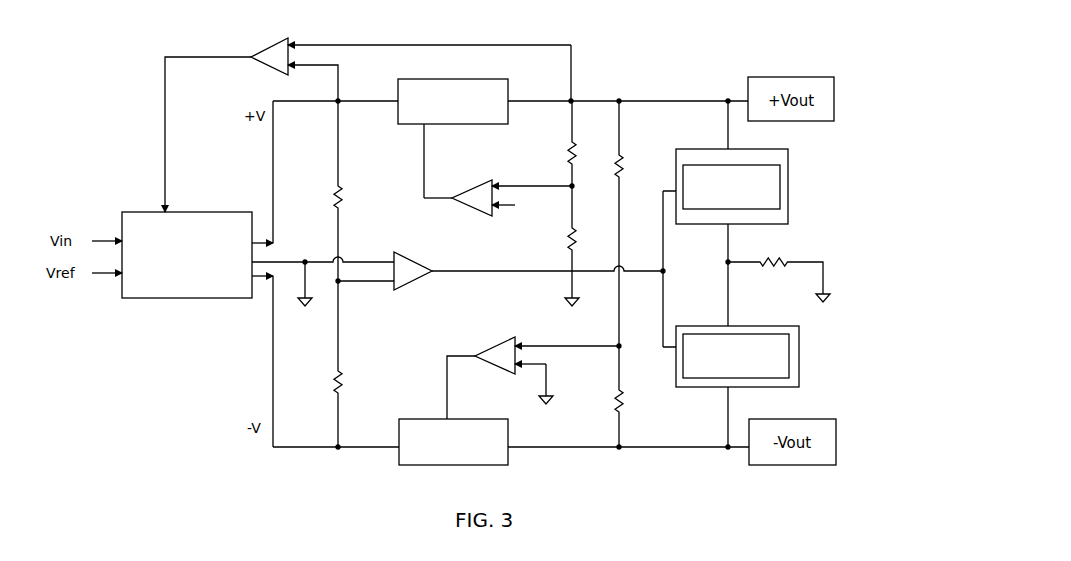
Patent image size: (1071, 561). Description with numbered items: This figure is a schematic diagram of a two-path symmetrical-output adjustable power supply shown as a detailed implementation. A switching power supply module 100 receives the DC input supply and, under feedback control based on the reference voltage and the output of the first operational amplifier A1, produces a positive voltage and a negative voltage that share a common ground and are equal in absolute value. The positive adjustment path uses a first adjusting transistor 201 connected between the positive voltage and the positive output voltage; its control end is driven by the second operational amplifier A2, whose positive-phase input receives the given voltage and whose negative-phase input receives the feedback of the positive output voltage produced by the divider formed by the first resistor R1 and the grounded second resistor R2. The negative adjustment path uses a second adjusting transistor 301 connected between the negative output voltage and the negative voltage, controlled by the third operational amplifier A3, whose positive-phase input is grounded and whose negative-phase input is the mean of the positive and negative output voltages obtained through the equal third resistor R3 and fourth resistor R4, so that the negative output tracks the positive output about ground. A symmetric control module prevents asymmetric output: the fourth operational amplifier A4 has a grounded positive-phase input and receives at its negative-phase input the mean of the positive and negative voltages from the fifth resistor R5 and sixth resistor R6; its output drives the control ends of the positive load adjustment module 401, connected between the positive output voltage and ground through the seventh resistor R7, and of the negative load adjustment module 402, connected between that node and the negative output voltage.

The switching power supply module 100 is at (193, 211).
The first adjusting transistor 201 is at (473, 79).
The second adjusting transistor 301 is at (468, 419).
The positive load adjustment module 401 is at (750, 149).
The negative load adjustment module 402 is at (745, 326).
The first operational amplifier A1 is at (368, 125).
The second operational amplifier A2 is at (498, 199).
The third operational amplifier A3 is at (533, 375).
The fourth operational amplifier A4 is at (528, 275).
The first resistor R1 is at (561, 144).
The second resistor R2 is at (582, 247).
The third resistor R3 is at (632, 223).
The fourth resistor R4 is at (632, 396).
The fifth resistor R5 is at (349, 191).
The sixth resistor R6 is at (349, 364).
The seventh resistor R7 is at (779, 271).